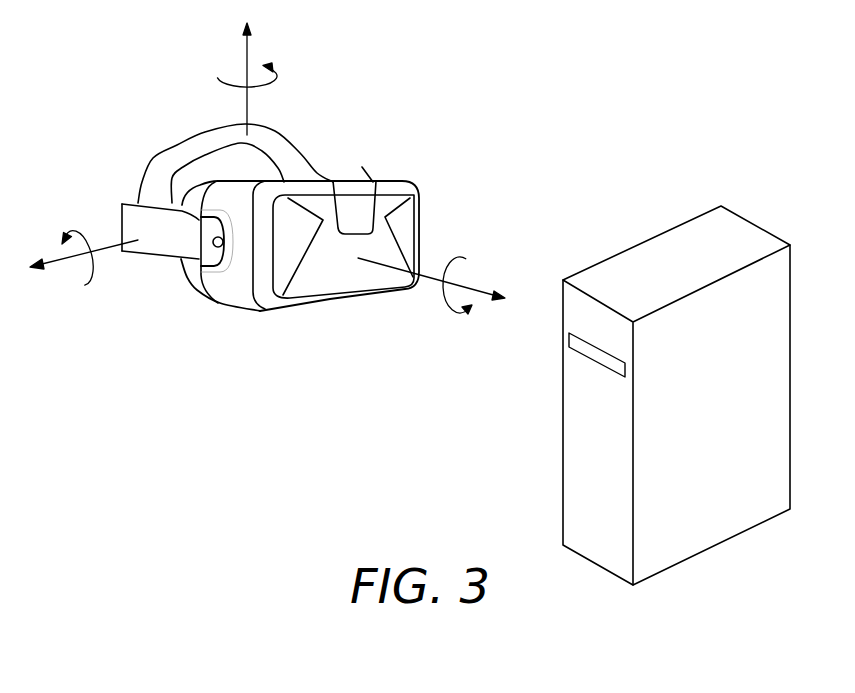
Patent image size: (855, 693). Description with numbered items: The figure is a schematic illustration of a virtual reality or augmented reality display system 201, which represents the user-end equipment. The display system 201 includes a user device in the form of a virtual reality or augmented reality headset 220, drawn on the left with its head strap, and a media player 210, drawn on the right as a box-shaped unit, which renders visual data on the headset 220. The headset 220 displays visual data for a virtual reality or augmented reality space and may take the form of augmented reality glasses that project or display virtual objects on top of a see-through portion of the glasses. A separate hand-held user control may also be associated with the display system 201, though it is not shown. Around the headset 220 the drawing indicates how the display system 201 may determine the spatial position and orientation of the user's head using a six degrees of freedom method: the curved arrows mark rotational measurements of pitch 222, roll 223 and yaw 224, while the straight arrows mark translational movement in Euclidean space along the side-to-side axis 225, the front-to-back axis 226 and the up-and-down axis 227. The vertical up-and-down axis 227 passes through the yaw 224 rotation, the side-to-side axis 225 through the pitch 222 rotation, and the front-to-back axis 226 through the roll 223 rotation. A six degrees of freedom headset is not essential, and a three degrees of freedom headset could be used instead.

The virtual reality or augmented reality display system 201 is at (626, 64).
The media player 210 is at (748, 533).
The virtual reality or augmented reality headset 220 is at (338, 308).
The pitch 222 is at (87, 283).
The roll 223 is at (472, 258).
The yaw 224 is at (230, 62).
The side-to-side axis 225 is at (103, 252).
The front-to-back axis 226 is at (432, 281).
The up-and-down axis 227 is at (247, 103).